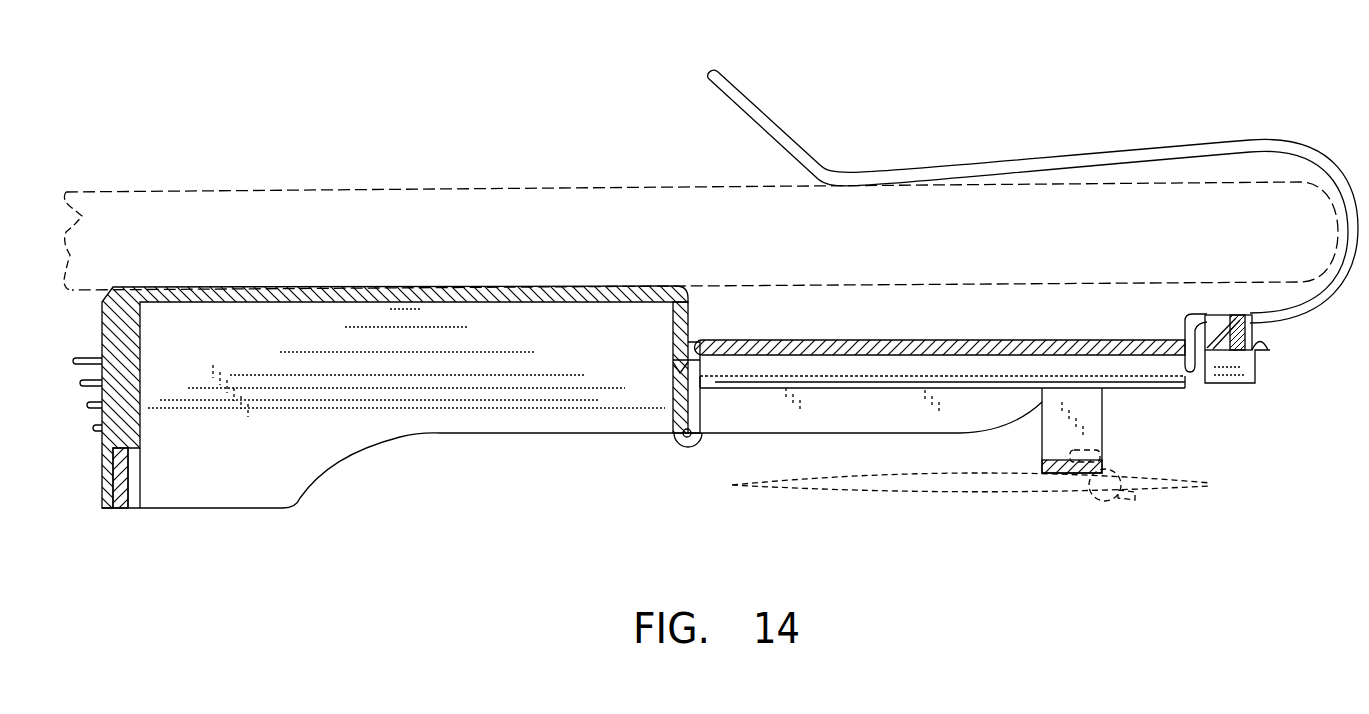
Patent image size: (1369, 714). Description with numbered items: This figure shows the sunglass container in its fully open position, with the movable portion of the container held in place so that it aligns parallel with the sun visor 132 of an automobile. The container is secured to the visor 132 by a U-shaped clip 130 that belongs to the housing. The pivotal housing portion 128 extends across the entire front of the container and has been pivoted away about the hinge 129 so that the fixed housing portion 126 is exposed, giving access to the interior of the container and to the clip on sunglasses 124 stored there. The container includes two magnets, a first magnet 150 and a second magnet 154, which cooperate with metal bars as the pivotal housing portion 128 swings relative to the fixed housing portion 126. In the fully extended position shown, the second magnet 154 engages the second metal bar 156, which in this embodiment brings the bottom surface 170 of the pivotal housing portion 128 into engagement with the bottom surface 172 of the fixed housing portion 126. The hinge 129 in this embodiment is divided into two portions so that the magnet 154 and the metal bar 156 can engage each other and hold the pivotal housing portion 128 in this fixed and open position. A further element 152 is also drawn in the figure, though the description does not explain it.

The clip on sunglasses 124 is at (983, 488).
The fixed housing portion 126 is at (958, 341).
The pivotal housing portion 128 is at (270, 490).
The hinge 129 is at (685, 441).
The U-shaped clip 130 is at (1212, 138).
The visor 132 is at (1132, 241).
The first magnet 150 is at (119, 510).
The retaining clip 152 is at (1263, 328).
The second magnet 154 is at (660, 367).
The second metal bar 156 is at (705, 378).
The bottom surface of pivotal housing portion 170 is at (692, 333).
The bottom surface of fixed housing portion 172 is at (712, 441).